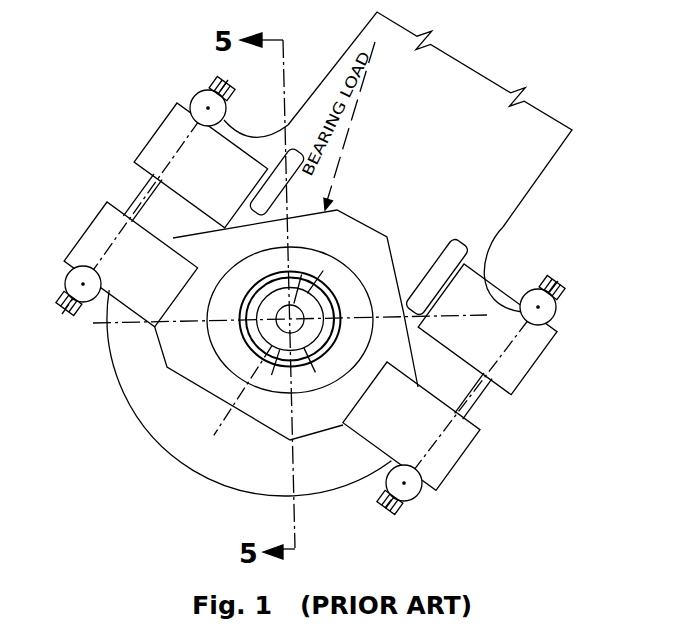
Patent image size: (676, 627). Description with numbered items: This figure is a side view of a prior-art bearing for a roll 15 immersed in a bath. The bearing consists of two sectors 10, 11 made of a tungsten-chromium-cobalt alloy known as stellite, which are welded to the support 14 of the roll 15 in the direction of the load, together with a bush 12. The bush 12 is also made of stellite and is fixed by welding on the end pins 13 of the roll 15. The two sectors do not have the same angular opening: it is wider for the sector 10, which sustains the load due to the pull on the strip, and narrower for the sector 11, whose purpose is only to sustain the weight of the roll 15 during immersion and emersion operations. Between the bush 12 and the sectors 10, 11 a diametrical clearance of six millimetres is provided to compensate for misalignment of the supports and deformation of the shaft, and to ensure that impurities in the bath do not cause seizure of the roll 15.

The sector 10 is at (205, 279).
The sector 11 is at (240, 404).
The bush 12 is at (191, 330).
The end pin 13 is at (347, 425).
The support 14 is at (310, 296).
The roll 15 is at (227, 393).